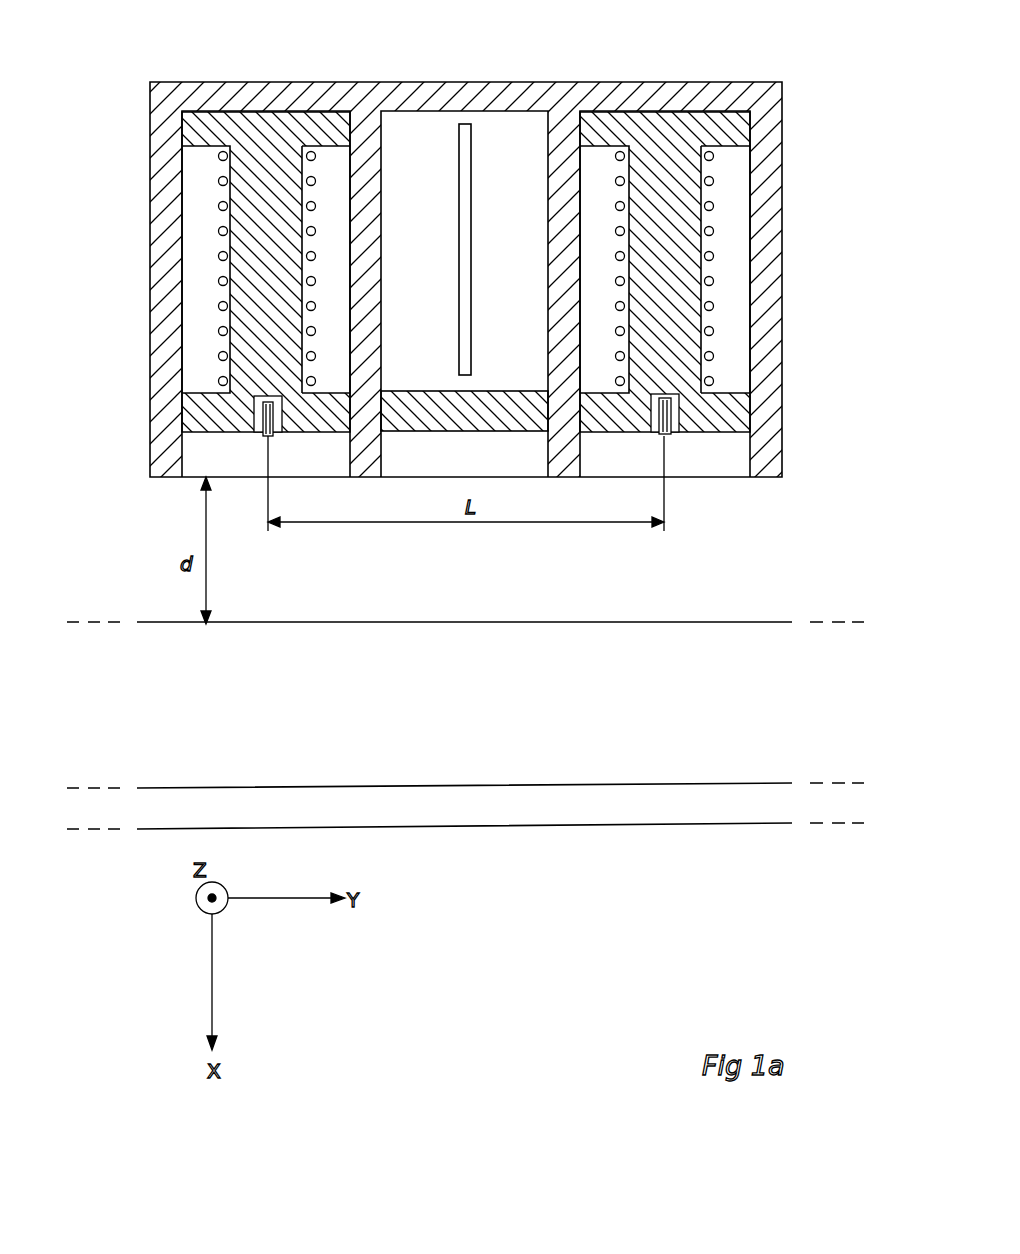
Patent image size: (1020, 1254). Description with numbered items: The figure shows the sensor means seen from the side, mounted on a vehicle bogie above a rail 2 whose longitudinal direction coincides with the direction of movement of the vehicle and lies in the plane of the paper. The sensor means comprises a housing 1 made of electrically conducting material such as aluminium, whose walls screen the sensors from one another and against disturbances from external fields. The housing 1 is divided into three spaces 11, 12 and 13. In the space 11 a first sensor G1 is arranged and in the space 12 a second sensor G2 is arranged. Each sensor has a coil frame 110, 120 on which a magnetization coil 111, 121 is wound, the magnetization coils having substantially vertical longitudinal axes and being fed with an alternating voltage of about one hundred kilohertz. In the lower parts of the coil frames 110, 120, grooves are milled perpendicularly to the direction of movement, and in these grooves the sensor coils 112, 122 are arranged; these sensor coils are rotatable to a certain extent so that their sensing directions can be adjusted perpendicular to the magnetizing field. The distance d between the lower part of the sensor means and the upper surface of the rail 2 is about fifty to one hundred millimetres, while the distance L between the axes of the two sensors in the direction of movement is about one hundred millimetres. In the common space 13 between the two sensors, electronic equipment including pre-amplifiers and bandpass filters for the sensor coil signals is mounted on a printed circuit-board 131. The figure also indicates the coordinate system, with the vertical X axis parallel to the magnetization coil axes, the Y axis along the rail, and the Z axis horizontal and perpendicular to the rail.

The housing 1 is at (127, 140).
The space 11 is at (210, 234).
The coil frame 110 is at (207, 133).
The magnetization coil 111 is at (218, 309).
The sensor coil 112 is at (262, 418).
The space 12 is at (724, 225).
The coil frame 120 is at (722, 127).
The magnetization coil 121 is at (712, 252).
The sensor coil 122 is at (668, 412).
The common space 13 is at (464, 225).
The printed circuit-board 131 is at (467, 238).
The sensor G1 is at (266, 200).
The sensor G2 is at (663, 200).
The rail 2 is at (558, 642).